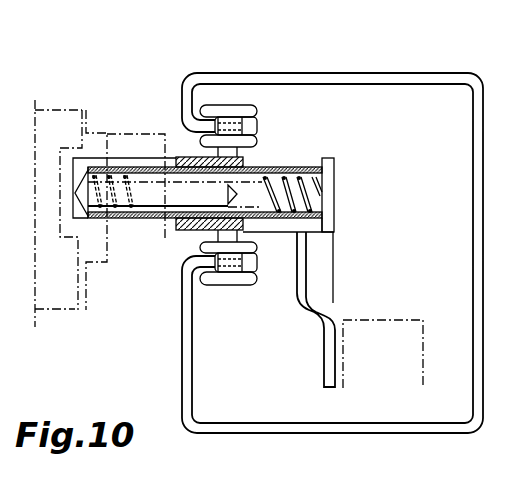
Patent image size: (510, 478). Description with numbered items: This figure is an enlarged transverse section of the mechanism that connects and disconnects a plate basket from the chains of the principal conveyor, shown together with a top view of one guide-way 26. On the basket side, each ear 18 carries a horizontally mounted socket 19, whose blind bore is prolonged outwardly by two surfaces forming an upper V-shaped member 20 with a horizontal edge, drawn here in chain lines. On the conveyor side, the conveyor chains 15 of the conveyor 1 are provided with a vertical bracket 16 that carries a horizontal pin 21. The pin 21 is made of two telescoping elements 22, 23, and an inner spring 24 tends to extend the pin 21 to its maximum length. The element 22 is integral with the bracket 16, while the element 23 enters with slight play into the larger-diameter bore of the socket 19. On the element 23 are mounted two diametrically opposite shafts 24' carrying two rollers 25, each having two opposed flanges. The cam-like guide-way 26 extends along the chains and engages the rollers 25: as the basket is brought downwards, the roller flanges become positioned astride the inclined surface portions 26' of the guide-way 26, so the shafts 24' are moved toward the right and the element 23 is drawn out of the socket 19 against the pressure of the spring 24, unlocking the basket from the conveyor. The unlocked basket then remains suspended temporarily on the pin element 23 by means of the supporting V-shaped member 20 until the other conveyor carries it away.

The conveyor 1 is at (367, 365).
The conveyor chains 15 is at (384, 320).
The vertical bracket 16 is at (300, 272).
The ear 18 is at (71, 309).
The socket 19 is at (97, 138).
The V-shaped member 20 is at (132, 134).
The horizontal pin 21 is at (264, 158).
The pin element 22 is at (300, 172).
The pin element 23 is at (153, 222).
The inner spring 24 is at (255, 205).
The shafts 24' is at (239, 195).
The rollers 25 is at (209, 110).
The guide-way 26 is at (309, 253).
The inclined surface portions 26' is at (259, 208).